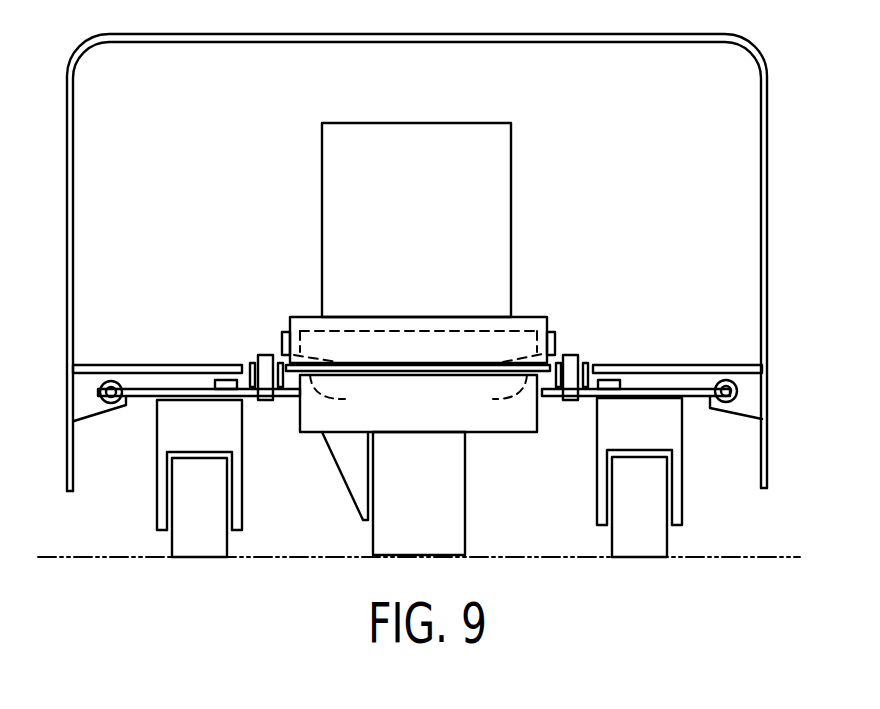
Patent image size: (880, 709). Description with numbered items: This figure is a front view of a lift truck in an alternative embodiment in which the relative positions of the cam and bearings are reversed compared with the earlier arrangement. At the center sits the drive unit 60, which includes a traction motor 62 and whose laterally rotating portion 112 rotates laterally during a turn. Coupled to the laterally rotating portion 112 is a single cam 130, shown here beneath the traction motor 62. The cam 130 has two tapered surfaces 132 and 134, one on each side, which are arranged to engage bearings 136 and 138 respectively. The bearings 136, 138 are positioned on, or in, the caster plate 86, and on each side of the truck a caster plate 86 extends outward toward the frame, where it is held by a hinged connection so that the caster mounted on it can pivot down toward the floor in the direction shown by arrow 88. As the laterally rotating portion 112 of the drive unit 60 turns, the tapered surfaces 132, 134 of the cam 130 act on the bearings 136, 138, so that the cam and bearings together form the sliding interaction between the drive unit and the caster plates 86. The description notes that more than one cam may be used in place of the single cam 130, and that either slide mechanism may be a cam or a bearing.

The drive unit 60 is at (547, 166).
The traction motor 62 is at (432, 231).
The caster plate 86 is at (140, 406).
The arrow 88 is at (294, 410).
The laterally rotating portion 112 is at (520, 317).
The cam 130 is at (415, 343).
The tapered surface 132 is at (488, 395).
The tapered surface 134 is at (418, 403).
The bearing 136 is at (571, 352).
The bearing 138 is at (263, 352).